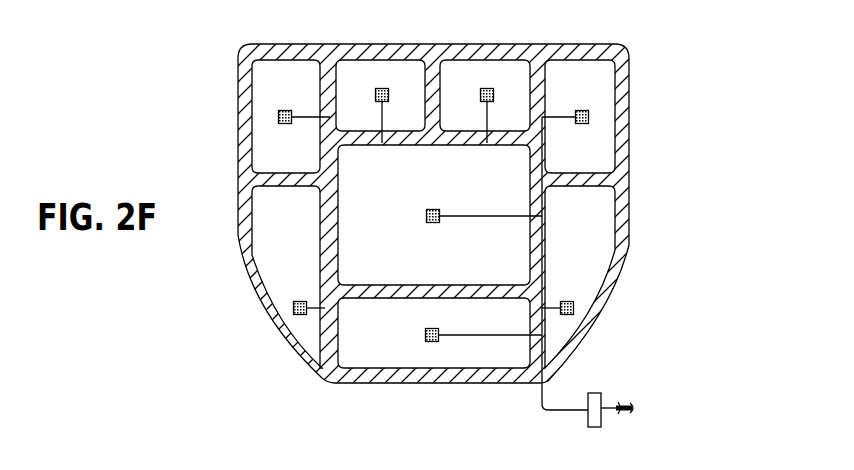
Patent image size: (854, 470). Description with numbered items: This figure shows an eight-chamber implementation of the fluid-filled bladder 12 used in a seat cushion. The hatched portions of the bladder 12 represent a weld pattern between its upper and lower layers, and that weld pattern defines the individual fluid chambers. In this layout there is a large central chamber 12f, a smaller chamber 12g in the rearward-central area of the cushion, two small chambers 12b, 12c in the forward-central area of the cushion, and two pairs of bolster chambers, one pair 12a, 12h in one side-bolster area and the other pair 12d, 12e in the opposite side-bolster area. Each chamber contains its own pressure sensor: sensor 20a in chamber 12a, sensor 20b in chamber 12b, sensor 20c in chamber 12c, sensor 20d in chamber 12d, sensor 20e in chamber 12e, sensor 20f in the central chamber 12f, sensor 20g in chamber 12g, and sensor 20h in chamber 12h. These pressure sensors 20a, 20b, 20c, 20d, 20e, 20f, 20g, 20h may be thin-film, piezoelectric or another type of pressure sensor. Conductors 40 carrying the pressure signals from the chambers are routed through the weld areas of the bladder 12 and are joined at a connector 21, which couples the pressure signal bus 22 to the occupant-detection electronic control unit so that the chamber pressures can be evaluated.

The fluid-filled bladder 12 is at (711, 247).
The bolster chamber 12a is at (600, 78).
The small chamber 12b is at (493, 75).
The small chamber 12c is at (388, 75).
The bolster chamber 12d is at (263, 73).
The bolster chamber 12e is at (288, 258).
The large central chamber 12f is at (517, 173).
The smaller chamber 12g is at (420, 357).
The bolster chamber 12h is at (600, 222).
The pressure sensor 20a is at (590, 118).
The pressure sensor 20b is at (479, 96).
The pressure sensor 20c is at (374, 96).
The pressure sensor 20d is at (276, 117).
The pressure sensor 20e is at (291, 306).
The pressure sensor 20f is at (425, 216).
The pressure sensor 20g is at (424, 335).
The pressure sensor 20h is at (575, 308).
The connector 21 is at (588, 432).
The pressure signal bus 22 is at (618, 405).
The conductors 40 is at (540, 402).